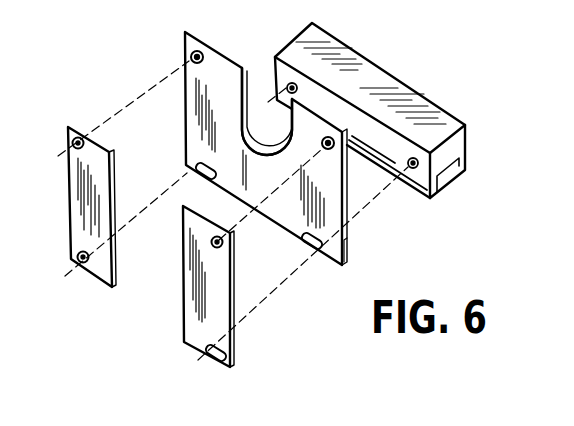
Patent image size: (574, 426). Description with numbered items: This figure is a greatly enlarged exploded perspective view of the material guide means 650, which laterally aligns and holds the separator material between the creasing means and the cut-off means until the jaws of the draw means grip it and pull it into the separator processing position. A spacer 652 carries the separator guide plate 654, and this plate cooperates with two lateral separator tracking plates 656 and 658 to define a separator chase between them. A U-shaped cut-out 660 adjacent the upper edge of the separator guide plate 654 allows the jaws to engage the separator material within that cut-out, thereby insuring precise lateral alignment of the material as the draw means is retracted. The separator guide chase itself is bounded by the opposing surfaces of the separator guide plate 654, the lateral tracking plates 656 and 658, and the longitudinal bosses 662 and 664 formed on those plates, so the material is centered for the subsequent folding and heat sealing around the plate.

The material guide means 650 is at (382, 243).
The spacer 652 is at (446, 160).
The separator guide plate 654 is at (213, 70).
The lateral separator tracking plate 656 is at (88, 200).
The lateral separator tracking plate 658 is at (208, 318).
The U-shaped cut-out 660 is at (246, 66).
The longitudinal boss 662 is at (73, 131).
The longitudinal boss 664 is at (230, 227).